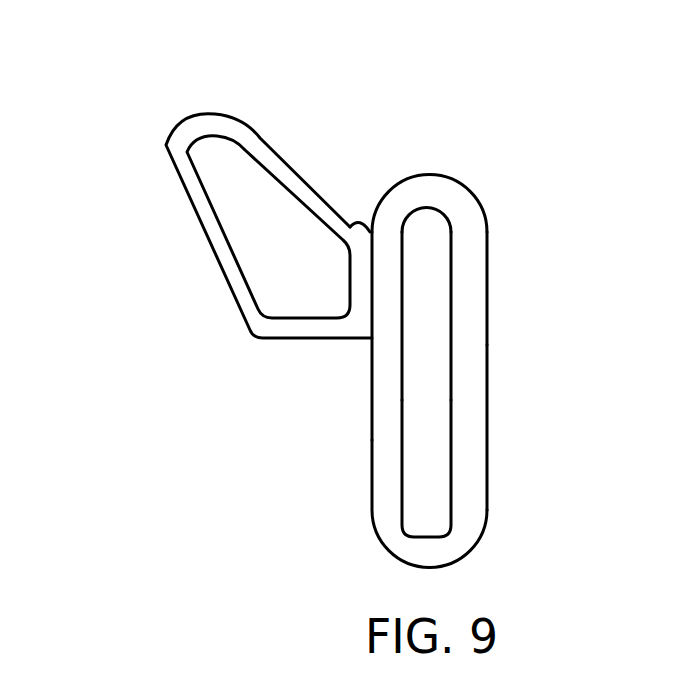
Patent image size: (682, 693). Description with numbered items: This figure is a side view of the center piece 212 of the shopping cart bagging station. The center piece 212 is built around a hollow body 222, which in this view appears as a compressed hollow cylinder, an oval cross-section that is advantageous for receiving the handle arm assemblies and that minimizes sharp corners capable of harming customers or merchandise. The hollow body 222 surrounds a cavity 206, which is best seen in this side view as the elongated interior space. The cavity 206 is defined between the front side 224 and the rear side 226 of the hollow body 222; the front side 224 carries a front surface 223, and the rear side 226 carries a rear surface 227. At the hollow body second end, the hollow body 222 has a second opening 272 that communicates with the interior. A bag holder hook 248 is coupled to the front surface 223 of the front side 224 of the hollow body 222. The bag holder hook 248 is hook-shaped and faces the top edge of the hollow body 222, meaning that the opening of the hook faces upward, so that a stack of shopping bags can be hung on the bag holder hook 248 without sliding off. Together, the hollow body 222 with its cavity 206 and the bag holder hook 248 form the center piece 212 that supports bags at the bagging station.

The center piece 212 is at (518, 78).
The bag holder hook 248 is at (185, 138).
The hollow body 222 is at (465, 203).
The second opening 272 is at (452, 302).
The rear side 226 is at (487, 342).
The rear surface 227 is at (487, 435).
The front side 224 is at (370, 390).
The front surface 223 is at (370, 483).
The cavity 206 is at (430, 485).